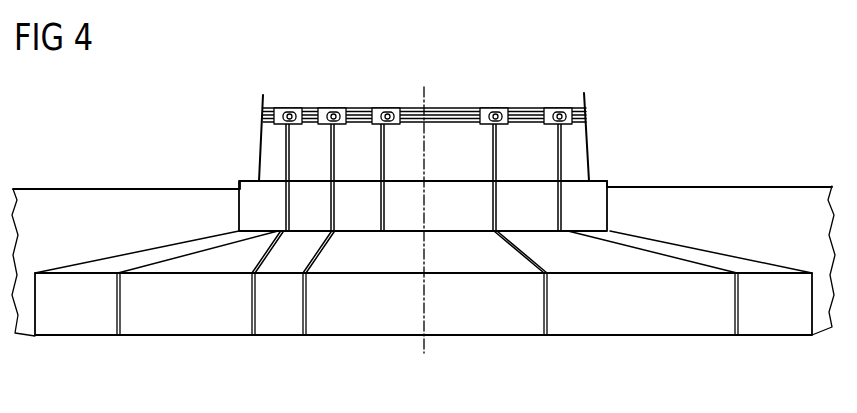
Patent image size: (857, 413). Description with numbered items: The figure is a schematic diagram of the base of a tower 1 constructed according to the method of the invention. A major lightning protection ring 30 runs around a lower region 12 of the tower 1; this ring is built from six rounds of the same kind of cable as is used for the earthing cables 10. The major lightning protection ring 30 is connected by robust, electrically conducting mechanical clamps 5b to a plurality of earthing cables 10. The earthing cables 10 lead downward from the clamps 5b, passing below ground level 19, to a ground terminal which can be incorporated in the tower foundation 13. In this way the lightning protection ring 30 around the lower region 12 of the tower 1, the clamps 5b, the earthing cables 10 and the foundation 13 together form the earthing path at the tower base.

The tower 1 is at (259, 145).
The mechanical clamps 5b is at (375, 107).
The earthing cables 10 is at (558, 203).
The lower region 12 is at (577, 128).
The tower foundation 13 is at (484, 336).
The ground level 19 is at (127, 189).
The major lightning protection ring 30 is at (455, 107).